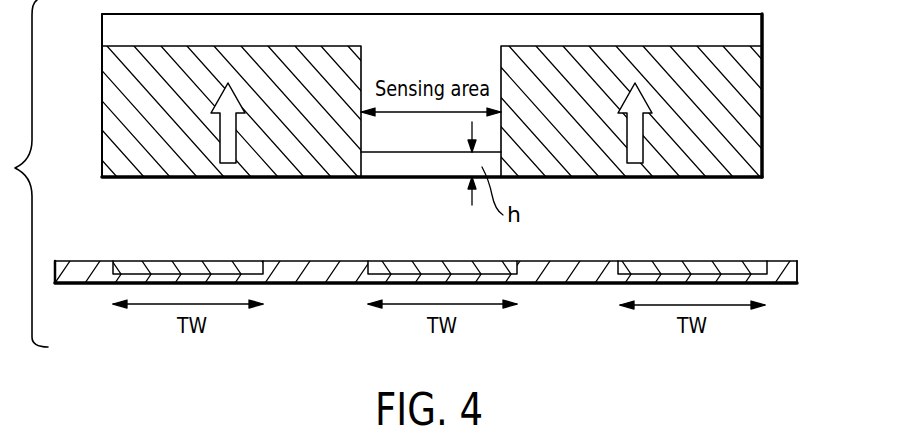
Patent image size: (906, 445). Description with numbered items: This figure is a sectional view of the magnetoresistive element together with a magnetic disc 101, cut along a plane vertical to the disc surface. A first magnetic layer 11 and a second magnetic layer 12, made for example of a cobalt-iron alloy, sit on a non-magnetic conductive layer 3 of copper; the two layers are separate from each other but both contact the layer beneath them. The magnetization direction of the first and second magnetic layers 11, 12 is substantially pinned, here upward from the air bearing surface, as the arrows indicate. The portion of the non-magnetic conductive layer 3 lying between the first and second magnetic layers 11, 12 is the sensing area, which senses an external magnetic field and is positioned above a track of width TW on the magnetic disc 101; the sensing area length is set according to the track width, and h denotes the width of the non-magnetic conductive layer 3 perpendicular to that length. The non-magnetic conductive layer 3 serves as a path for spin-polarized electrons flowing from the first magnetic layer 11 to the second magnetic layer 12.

The first magnetic layer 11 is at (113, 95).
The second magnetic layer 12 is at (745, 97).
The non-magnetic conductive layer 3 is at (418, 168).
The magnetic disc 101 is at (779, 261).